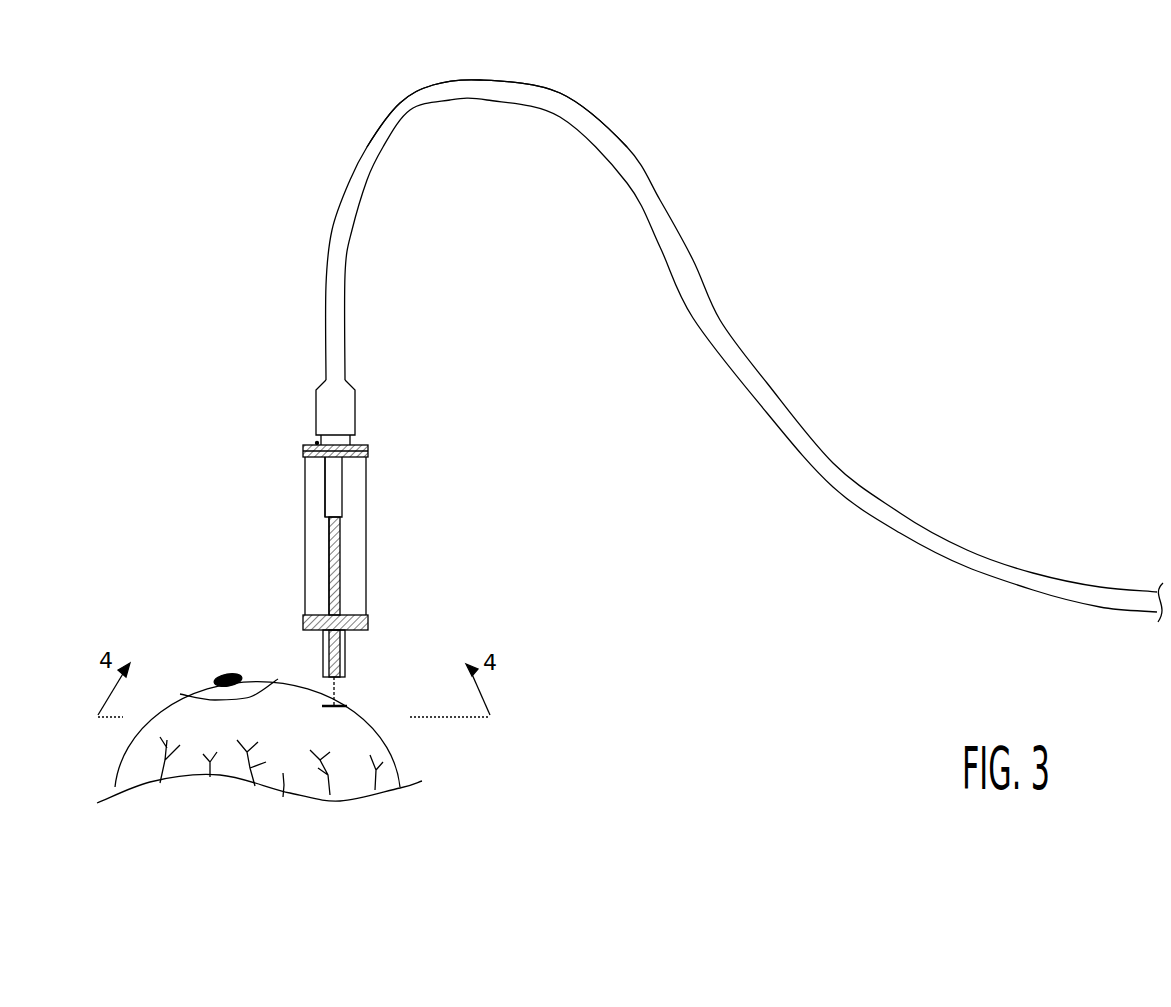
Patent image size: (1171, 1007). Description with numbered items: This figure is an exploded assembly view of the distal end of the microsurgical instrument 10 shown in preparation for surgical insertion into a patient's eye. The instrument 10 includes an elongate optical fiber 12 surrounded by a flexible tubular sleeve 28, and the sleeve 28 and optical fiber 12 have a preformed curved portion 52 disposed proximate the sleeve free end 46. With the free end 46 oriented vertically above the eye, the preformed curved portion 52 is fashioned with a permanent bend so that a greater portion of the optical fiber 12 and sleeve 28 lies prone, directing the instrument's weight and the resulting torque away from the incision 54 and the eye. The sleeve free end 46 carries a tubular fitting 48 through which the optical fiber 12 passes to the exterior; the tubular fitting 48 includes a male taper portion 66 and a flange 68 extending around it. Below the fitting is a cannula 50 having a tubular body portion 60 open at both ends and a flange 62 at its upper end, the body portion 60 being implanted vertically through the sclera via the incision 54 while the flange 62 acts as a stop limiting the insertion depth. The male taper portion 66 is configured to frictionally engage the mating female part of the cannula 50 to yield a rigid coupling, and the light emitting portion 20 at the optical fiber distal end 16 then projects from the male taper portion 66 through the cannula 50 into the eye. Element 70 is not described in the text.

The instrument 10 is at (726, 139).
The optical fiber 12 is at (343, 529).
The distal end 16 is at (388, 581).
The light emitting portion 20 is at (325, 572).
The sleeve 28 is at (633, 195).
The free end 46 is at (358, 408).
The tubular fitting 48 is at (314, 442).
The cannula 50 is at (370, 623).
The preformed curved portion 52 is at (598, 67).
The incision 54 is at (337, 707).
The tubular body portion 60 is at (348, 652).
The flange 62 is at (308, 632).
The male taper portion 66 is at (325, 490).
The flange 68 is at (358, 443).
The needle lumen 70 is at (325, 605).